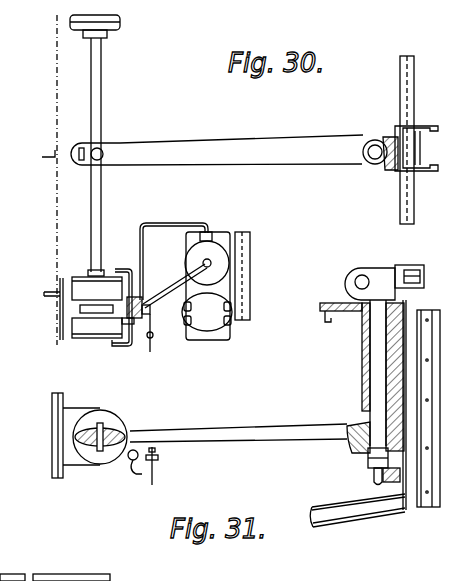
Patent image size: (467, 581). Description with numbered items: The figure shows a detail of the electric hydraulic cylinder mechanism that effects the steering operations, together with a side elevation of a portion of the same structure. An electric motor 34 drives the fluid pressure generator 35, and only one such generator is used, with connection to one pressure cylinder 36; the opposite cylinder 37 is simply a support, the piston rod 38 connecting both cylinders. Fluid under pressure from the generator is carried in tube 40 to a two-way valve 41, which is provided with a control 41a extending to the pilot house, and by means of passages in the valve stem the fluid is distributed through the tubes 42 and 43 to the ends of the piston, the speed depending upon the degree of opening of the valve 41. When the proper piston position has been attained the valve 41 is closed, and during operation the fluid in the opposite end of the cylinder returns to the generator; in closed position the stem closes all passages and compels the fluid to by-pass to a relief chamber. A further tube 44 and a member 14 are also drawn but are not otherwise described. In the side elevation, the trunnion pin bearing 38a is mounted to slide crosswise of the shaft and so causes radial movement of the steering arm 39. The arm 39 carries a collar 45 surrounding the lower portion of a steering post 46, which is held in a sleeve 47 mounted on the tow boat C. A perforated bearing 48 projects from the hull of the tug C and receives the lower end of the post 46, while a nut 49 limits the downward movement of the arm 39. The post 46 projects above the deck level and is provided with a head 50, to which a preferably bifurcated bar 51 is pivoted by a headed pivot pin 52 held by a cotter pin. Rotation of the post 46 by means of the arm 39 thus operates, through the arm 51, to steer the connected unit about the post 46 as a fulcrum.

In FIG. 30, the opposite cylinder 37 is at (115, 28).
In FIG. 30, the piston rod 38 is at (102, 124).
In FIG. 30, the steering arm 39 is at (292, 144).
In FIG. 31, the steering arm 39 is at (183, 434).
In FIG. 30, the fluid pressure generator 35 is at (232, 236).
In FIG. 30, the electric motor 34 is at (232, 326).
In FIG. 30, the conduit 44 is at (183, 217).
In FIG. 30, the tube 43 is at (128, 268).
In FIG. 30, the pressure cylinder 36 is at (78, 340).
In FIG. 30, the two-way valve 41 is at (145, 299).
In FIG. 30, the tube 40 is at (160, 292).
In FIG. 30, the tube 42 is at (130, 348).
In FIG. 30, the control 41a is at (153, 354).
In FIG. 31, the trunnion pin bearing 38a is at (88, 448).
In FIG. 31, the head 50 is at (389, 270).
In FIG. 31, the bar 51 is at (420, 265).
In FIG. 31, the headed pivot pin 52 is at (357, 277).
In FIG. 31, the sleeve 47 is at (360, 335).
In FIG. 31, the steering post 46 is at (378, 378).
In FIG. 31, the collar 45 is at (358, 447).
In FIG. 31, the nut 49 is at (368, 460).
In FIG. 31, the perforated bearing 48 is at (372, 484).
In FIG. 31, the frame 14 is at (405, 515).
In FIG. 31, the tow boat C is at (436, 505).